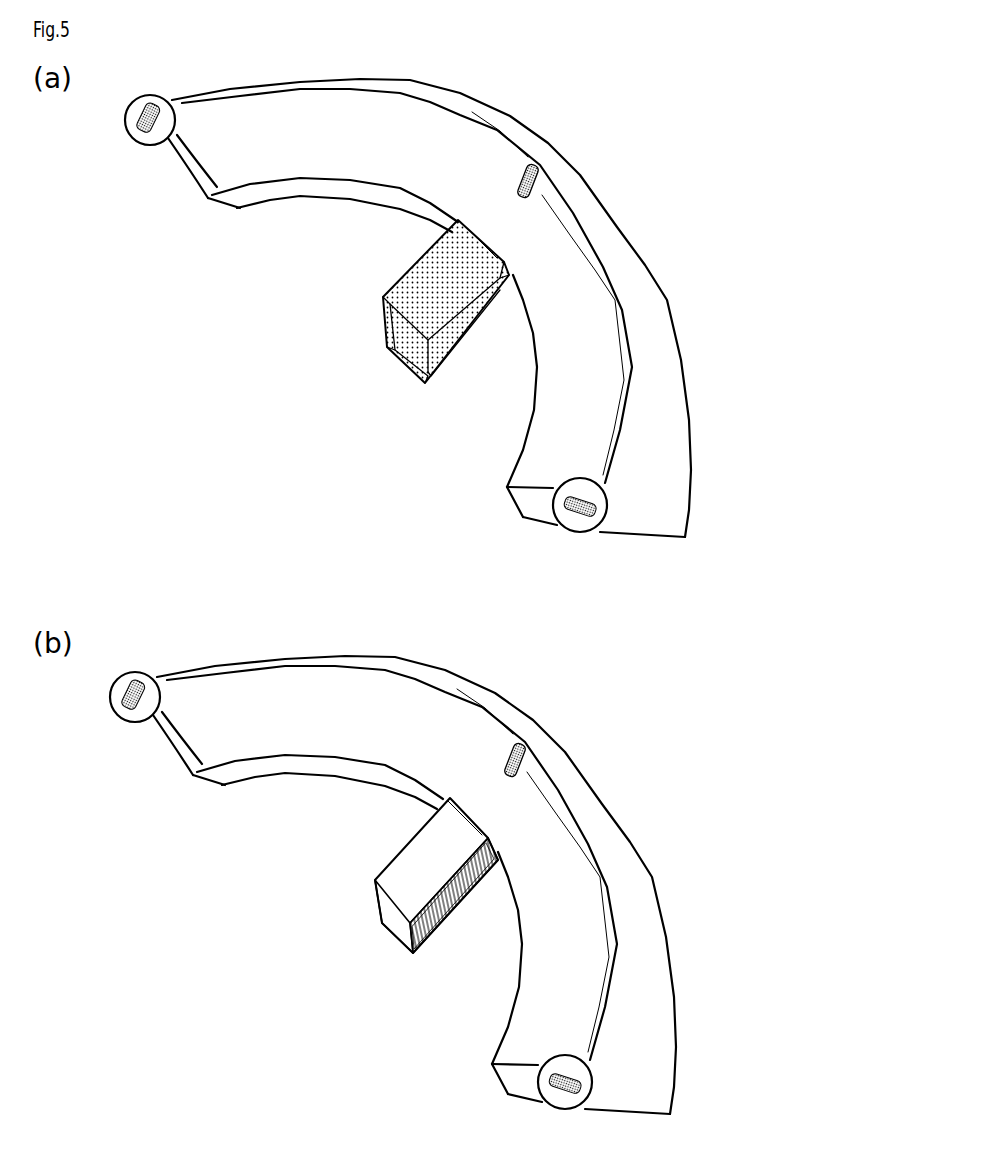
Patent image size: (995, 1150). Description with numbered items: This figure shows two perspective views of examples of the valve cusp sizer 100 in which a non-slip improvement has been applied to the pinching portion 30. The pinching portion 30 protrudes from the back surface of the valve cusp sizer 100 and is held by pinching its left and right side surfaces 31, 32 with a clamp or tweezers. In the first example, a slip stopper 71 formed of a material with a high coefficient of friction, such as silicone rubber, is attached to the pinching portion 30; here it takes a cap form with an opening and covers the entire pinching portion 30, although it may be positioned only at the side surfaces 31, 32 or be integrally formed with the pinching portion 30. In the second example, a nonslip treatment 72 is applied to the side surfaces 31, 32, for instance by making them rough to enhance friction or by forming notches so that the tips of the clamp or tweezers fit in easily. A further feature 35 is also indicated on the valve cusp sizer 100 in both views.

The valve cusp sizer 100 is at (598, 144).
The pinching portion 30 is at (408, 261).
The left side surface 31 is at (384, 308).
The right side surface 32 is at (447, 352).
The positioning protrusion 35 is at (500, 498).
The slip stopper 71 is at (401, 366).
The nonslip treatment 72 is at (449, 893).